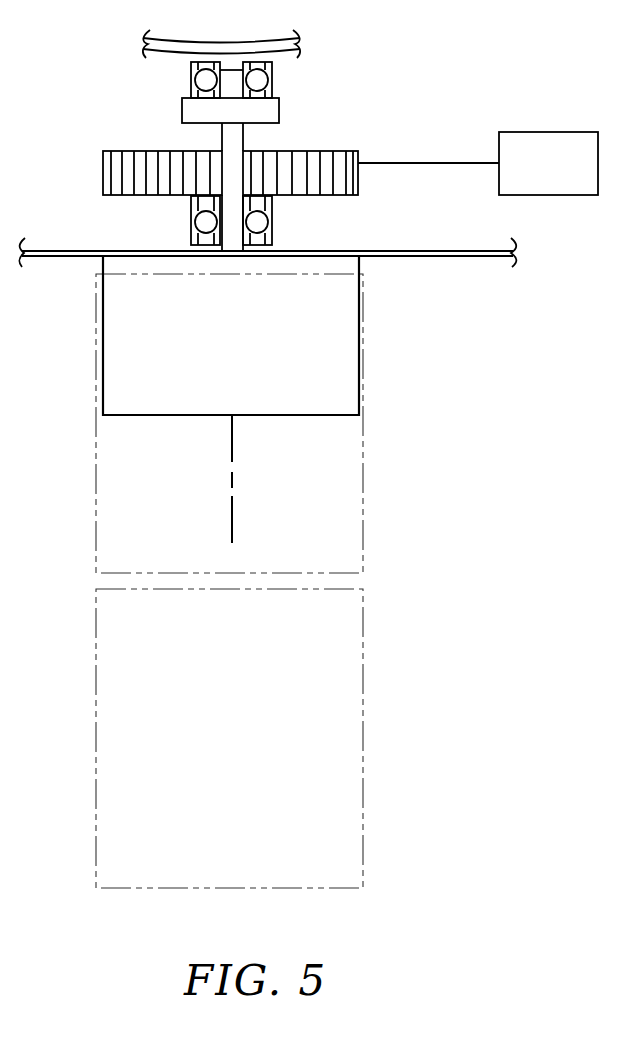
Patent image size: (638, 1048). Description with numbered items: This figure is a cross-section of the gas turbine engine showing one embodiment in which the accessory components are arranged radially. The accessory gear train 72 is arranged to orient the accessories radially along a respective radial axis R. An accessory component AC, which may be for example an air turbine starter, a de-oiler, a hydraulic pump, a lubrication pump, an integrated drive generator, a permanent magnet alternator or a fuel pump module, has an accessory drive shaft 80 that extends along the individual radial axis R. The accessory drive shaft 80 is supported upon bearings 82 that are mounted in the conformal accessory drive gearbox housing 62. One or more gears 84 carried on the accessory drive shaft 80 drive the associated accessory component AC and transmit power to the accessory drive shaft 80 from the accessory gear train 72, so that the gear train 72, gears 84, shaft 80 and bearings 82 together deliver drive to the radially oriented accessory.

The conformal accessory drive gearbox housing 62 is at (418, 256).
The accessory gear train 72 is at (536, 178).
The accessory drive shaft 80 is at (233, 143).
The bearings 82 is at (190, 78).
The gears 84 is at (347, 178).
The accessory component AC is at (240, 337).
The radial axis R is at (232, 527).